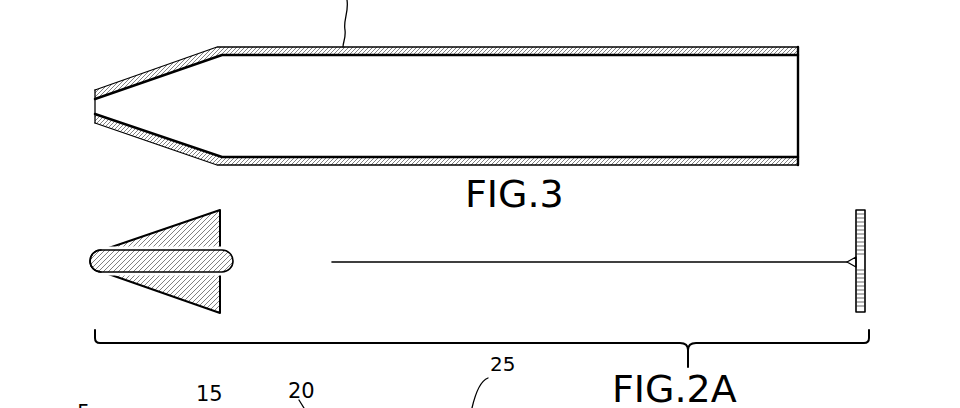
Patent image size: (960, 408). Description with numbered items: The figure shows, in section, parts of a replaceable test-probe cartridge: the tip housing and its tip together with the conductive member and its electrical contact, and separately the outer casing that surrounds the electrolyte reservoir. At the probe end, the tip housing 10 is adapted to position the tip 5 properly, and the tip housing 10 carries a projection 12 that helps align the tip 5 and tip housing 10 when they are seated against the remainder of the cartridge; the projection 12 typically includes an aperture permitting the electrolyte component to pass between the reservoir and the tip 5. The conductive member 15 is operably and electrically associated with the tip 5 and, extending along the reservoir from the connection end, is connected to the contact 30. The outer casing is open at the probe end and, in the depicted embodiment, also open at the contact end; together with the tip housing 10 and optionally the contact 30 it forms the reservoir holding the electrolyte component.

The tip 5 is at (100, 258).
The tip housing 10 is at (158, 283).
The projection 12 is at (231, 257).
The conductive member 15 is at (392, 262).
The contact 30 is at (866, 225).